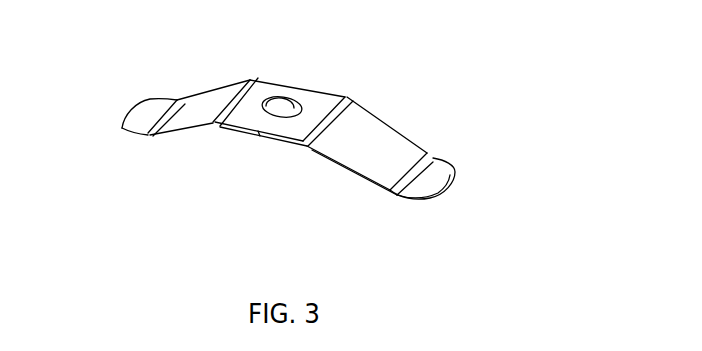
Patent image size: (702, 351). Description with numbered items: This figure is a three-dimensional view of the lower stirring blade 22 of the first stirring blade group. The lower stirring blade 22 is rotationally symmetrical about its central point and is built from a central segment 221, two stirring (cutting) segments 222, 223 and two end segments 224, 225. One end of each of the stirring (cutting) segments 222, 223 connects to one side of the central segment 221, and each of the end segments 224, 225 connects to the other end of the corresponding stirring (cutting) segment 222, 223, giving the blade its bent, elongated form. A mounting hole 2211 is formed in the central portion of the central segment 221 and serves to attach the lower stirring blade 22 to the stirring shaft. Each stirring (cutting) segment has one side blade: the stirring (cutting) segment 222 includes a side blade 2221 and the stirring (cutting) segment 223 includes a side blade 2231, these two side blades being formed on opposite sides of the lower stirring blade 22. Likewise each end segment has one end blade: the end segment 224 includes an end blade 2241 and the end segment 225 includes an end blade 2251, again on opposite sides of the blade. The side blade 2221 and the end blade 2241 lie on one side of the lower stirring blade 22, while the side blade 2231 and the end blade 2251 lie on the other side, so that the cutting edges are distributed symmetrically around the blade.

The lower stirring blade 22 is at (290, 140).
The central segment 221 is at (311, 77).
The mounting hole 2211 is at (297, 110).
The stirring (cutting) segment 222 is at (181, 118).
The side blade 2221 is at (170, 135).
The stirring (cutting) segment 223 is at (415, 122).
The side blade 2231 is at (407, 138).
The end segment 224 is at (106, 113).
The end blade 2241 is at (130, 132).
The end segment 225 is at (471, 203).
The end blade 2251 is at (437, 162).